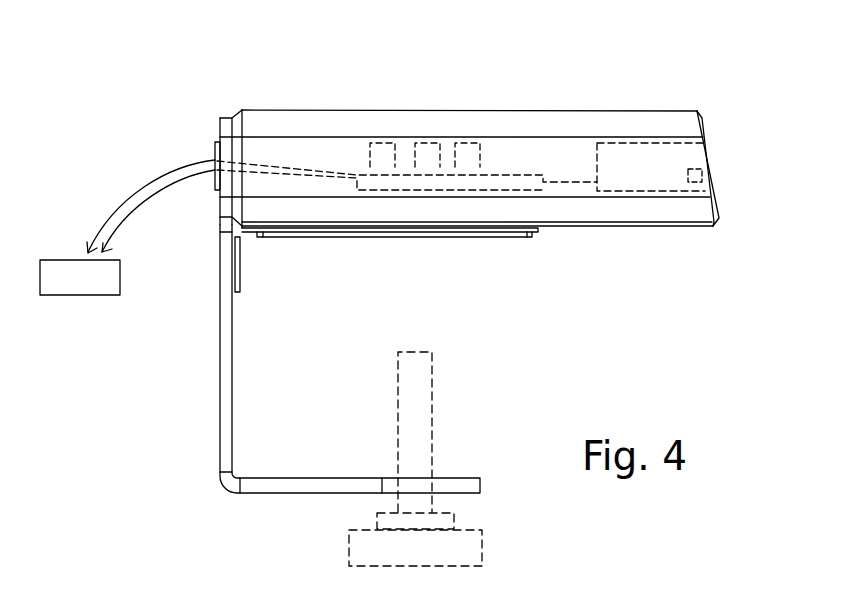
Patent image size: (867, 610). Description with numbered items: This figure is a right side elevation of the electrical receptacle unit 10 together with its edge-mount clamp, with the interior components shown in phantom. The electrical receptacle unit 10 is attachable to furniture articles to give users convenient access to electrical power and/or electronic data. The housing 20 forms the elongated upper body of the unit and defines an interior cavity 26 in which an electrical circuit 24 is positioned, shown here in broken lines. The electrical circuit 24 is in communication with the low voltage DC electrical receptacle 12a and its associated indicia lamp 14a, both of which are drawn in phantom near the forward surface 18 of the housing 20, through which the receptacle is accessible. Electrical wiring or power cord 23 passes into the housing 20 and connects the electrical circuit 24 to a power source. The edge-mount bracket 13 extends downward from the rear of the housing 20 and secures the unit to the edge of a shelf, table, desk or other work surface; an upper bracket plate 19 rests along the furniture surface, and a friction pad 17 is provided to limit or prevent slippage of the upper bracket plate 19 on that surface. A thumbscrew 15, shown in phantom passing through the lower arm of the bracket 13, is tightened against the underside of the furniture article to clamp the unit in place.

The electrical receptacle unit 10 is at (740, 58).
The low voltage DC electrical receptacle 12a is at (653, 143).
The edge-mount bracket 13 is at (220, 352).
The indicia lamp 14a is at (690, 180).
The thumbscrew 15 is at (430, 421).
The friction pad 17 is at (477, 237).
The forward surface 18 is at (713, 160).
The upper bracket plate 19 is at (345, 230).
The housing 20 is at (507, 110).
The electrical wiring or power cord 23 is at (277, 162).
The electrical circuit 24 is at (403, 137).
The interior cavity 26 is at (332, 132).